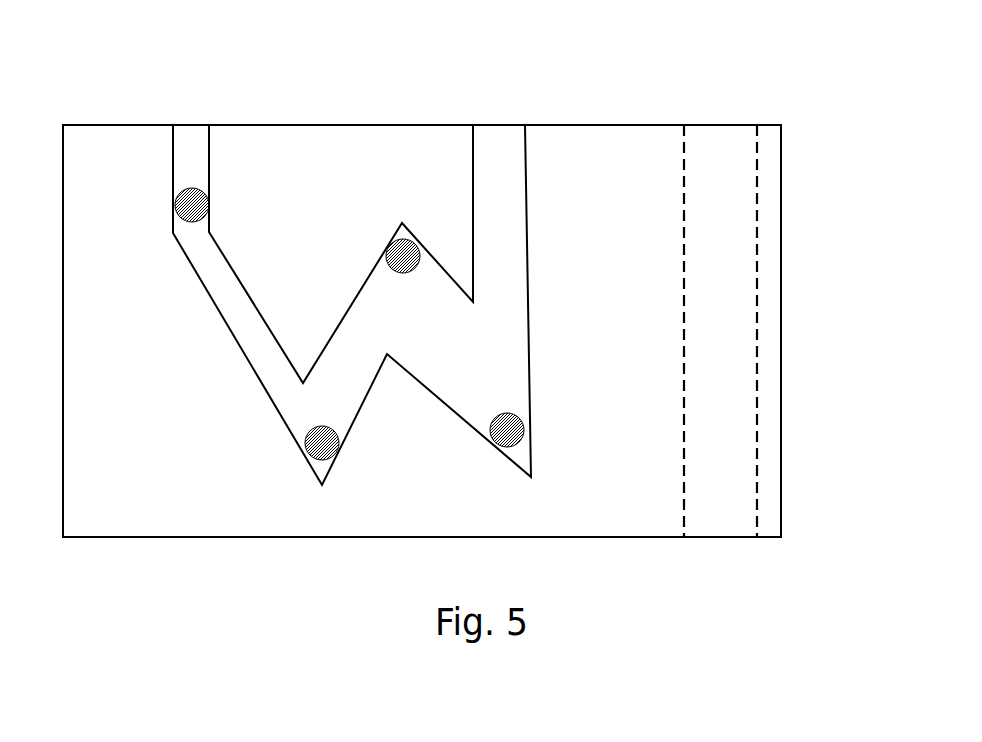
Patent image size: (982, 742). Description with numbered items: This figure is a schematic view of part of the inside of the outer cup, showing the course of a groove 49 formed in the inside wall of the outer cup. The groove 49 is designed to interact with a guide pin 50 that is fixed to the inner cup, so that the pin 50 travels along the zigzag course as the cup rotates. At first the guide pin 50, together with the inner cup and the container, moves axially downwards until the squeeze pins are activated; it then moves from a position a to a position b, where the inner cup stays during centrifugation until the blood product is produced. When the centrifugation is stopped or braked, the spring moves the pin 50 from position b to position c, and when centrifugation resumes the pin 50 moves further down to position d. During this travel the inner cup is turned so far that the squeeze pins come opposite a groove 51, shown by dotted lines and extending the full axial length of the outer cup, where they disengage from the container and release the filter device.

The groove 49 is at (190, 160).
The guide pin 50 is at (190, 207).
The groove 51 is at (732, 391).
The position a is at (180, 207).
The position b is at (317, 443).
The position c is at (407, 262).
The position d is at (508, 430).